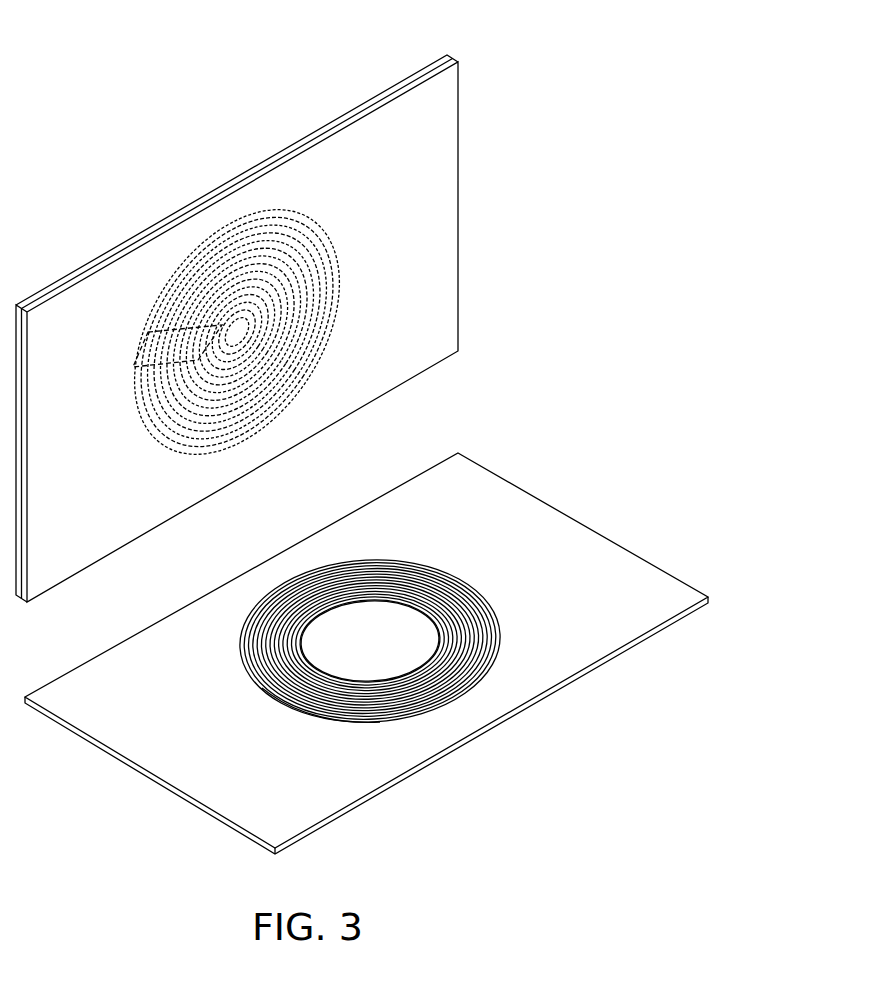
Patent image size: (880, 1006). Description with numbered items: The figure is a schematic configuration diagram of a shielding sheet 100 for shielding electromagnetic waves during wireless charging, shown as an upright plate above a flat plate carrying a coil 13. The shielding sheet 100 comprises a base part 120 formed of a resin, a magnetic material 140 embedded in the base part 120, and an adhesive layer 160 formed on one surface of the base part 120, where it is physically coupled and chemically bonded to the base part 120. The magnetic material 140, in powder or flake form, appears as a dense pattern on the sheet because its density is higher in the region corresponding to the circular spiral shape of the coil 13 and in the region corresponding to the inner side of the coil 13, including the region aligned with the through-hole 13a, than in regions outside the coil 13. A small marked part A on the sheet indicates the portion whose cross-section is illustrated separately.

The shielding sheet 100 is at (286, 306).
The base part 120 is at (323, 130).
The adhesive layer 160 is at (459, 61).
The magnetic material 140 is at (335, 267).
The part A is at (148, 330).
The coil 13 is at (392, 698).
The through-hole 13a is at (391, 634).